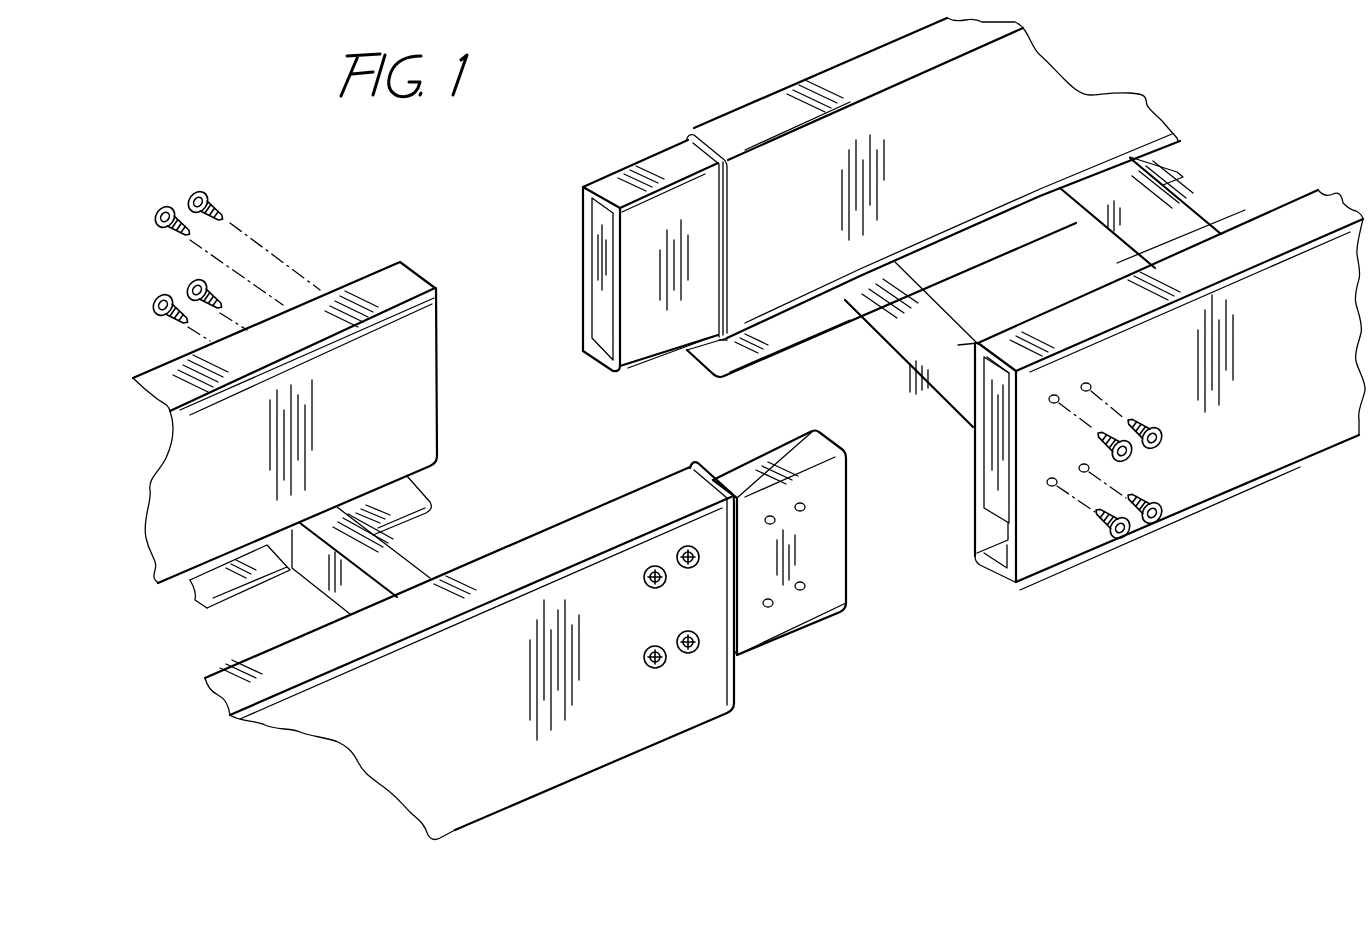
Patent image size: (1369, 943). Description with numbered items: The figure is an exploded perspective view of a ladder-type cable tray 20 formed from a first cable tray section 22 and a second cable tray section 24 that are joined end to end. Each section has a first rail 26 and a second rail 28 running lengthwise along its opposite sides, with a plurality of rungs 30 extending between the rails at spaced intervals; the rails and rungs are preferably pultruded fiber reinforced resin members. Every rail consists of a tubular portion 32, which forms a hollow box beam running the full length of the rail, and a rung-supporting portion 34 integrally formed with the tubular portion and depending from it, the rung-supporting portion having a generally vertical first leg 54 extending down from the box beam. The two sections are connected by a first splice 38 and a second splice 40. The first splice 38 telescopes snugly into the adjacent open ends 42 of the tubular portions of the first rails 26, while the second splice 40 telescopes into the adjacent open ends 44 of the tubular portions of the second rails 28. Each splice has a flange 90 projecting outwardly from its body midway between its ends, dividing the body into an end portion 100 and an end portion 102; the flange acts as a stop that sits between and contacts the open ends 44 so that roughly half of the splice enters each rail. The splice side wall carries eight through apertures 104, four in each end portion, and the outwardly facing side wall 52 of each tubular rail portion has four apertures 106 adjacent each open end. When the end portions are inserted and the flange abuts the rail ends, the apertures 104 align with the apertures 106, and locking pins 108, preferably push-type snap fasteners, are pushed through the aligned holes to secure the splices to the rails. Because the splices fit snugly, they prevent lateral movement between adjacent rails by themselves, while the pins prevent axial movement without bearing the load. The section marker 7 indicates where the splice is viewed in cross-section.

The cable tray 20 is at (594, 152).
The first cable tray section 22 is at (396, 255).
The second cable tray section 24 is at (805, 72).
The first rail 26 is at (410, 277).
The second rail 28 is at (600, 512).
The rung 30 is at (390, 560).
The tubular portion 32 is at (982, 487).
The rung-supporting portion 34 is at (430, 495).
The first splice 38 is at (650, 160).
The second splice 40 is at (825, 445).
The open ends 42 is at (440, 290).
The open ends 44 is at (700, 462).
The side wall 52 is at (1255, 462).
The first leg 54 is at (797, 326).
The flange 90 is at (686, 135).
The end portion 100 is at (580, 200).
The end portion 102 is at (846, 520).
The through apertures 104 is at (803, 510).
The apertures 106 is at (1087, 383).
The locking pins 108 is at (160, 205).
The section line 7 is at (697, 445).